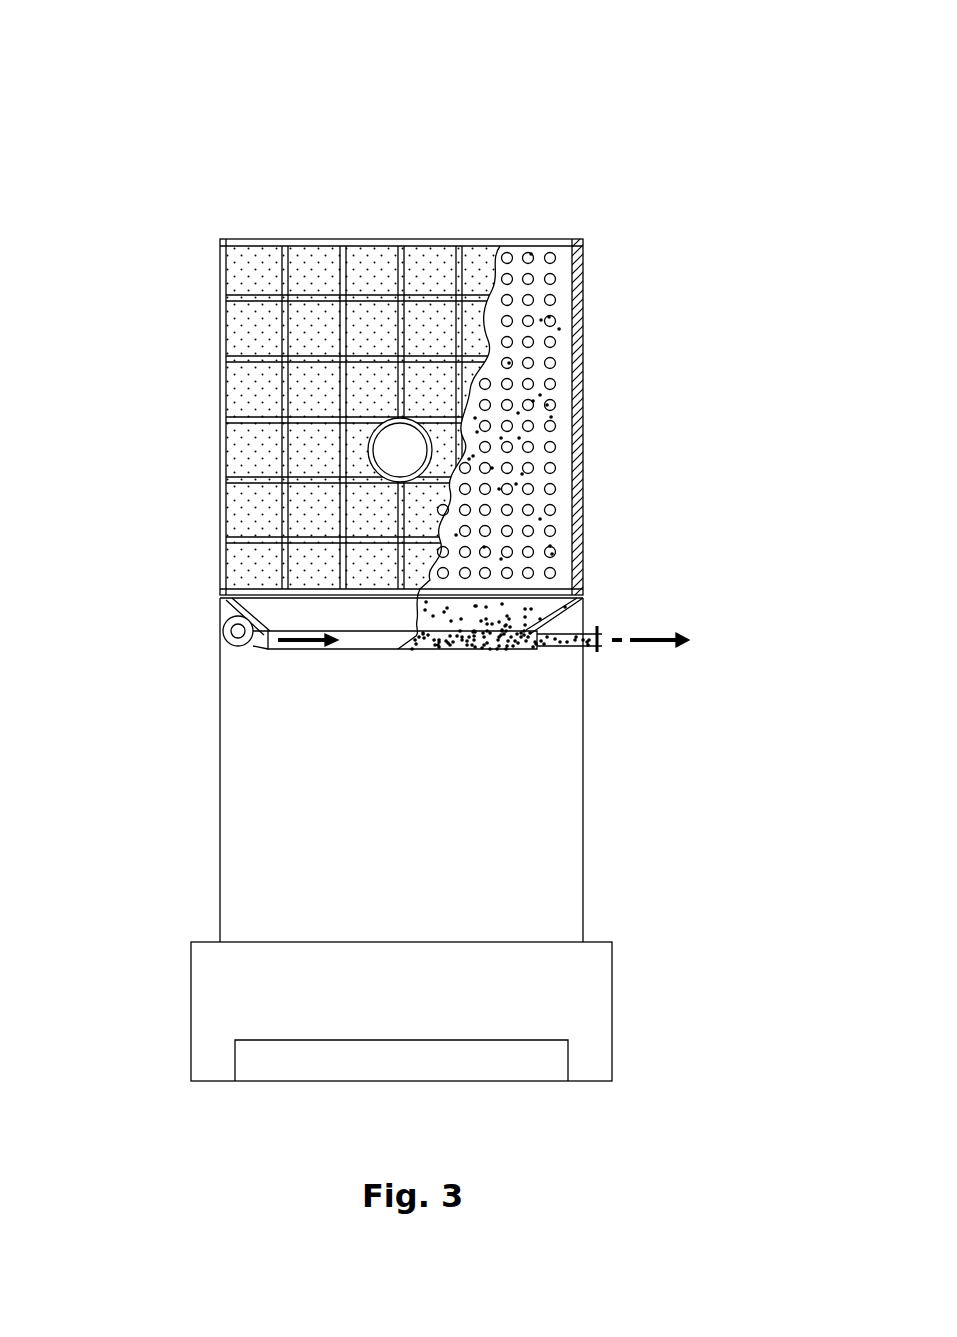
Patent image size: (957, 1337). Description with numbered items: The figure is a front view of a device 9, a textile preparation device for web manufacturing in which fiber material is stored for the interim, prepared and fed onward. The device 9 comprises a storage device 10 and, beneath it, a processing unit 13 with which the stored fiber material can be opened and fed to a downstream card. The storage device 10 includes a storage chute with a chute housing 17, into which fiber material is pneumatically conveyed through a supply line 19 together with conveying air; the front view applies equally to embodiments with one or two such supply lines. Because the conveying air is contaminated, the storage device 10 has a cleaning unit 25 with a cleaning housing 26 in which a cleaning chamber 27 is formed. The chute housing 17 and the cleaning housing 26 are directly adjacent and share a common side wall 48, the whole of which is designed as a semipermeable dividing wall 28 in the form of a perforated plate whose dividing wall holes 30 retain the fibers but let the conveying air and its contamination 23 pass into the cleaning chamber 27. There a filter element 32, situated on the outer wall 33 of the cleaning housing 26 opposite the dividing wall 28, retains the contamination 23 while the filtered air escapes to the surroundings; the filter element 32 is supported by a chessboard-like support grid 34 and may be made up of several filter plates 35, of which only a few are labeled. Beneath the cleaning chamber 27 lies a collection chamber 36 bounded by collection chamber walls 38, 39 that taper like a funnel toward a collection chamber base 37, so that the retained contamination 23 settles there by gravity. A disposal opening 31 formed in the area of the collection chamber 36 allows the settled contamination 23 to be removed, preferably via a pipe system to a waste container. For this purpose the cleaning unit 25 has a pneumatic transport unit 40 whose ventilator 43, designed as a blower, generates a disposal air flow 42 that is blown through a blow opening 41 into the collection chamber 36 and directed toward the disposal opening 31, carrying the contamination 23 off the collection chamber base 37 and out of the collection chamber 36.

The device 9 is at (110, 97).
The storage device 10 is at (218, 723).
The processing unit 13 is at (191, 995).
The chute housing 17 is at (250, 803).
The supply line 19 is at (388, 448).
The contamination 23 is at (553, 410).
The cleaning unit 25 is at (409, 370).
The cleaning housing 26 is at (577, 265).
The cleaning chamber 27 is at (565, 367).
The dividing wall 28 is at (540, 268).
The dividing wall holes 30 is at (522, 253).
The disposal opening 31 is at (527, 643).
The filter element 32 is at (318, 275).
The outer wall 33 is at (250, 267).
The support grid 34 is at (282, 358).
The filter plates 35 is at (427, 272).
The collection chamber 36 is at (582, 596).
The collection chamber base 37 is at (520, 658).
The collection chamber wall 38 is at (570, 617).
The collection chamber wall 39 is at (220, 605).
The transport unit 40 is at (262, 647).
The blow opening 41 is at (220, 640).
The disposal air flow 42 is at (690, 640).
The ventilator 43 is at (223, 622).
The common side wall 48 is at (557, 460).